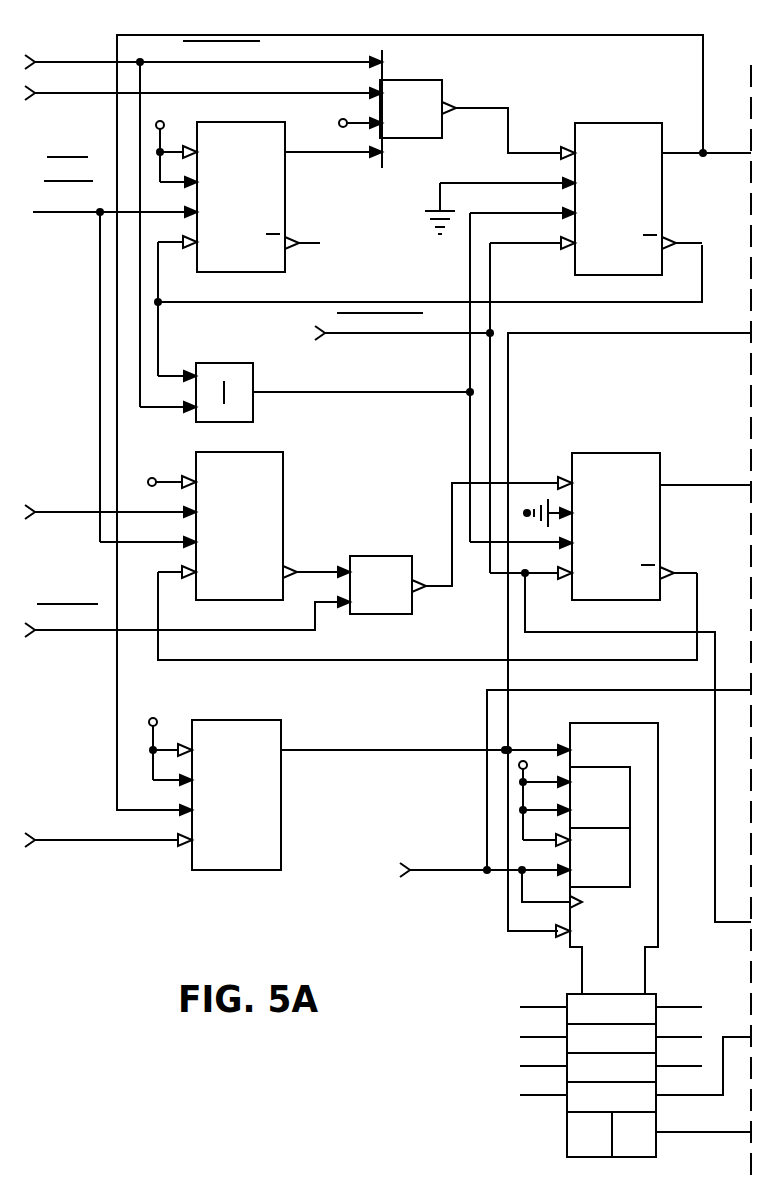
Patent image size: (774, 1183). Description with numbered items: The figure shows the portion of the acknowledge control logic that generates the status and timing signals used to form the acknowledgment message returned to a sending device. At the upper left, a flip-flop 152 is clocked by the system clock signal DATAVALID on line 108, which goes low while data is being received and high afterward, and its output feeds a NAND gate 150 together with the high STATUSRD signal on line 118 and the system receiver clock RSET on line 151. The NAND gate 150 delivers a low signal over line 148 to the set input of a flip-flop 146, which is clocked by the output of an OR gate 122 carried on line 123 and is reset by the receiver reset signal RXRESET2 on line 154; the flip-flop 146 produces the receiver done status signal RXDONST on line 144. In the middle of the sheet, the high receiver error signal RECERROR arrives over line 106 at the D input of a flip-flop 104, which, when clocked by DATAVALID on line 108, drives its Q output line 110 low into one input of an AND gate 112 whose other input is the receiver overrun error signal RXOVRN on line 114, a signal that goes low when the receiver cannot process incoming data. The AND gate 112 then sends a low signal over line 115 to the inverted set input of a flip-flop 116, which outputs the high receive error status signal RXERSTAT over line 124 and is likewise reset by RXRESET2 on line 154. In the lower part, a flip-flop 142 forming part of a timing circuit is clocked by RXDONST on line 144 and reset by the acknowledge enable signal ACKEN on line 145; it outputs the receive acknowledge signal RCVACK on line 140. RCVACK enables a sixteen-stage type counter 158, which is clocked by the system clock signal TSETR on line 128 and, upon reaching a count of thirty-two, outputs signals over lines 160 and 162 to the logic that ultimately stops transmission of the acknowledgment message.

The line 118 is at (100, 62).
The line 151 is at (100, 96).
The line 108 is at (100, 265).
The flip-flop 152 is at (285, 196).
The NAND gate 150 is at (405, 83).
The line 148 is at (490, 108).
The LS74 flip-flop 146 is at (628, 124).
The line 144 is at (660, 37).
The OR gate 122 is at (231, 363).
The line 123 is at (351, 392).
The line 154 is at (441, 335).
The LS74 flip-flop 104 is at (283, 474).
The line 106 is at (81, 513).
The Q output line 110 is at (310, 568).
The AND gate 112 is at (371, 556).
The line 114 is at (317, 615).
The line 115 is at (441, 590).
The LS74 flip-flop 116 is at (613, 453).
The line 124 is at (736, 488).
The 74LS flip-flop 142 is at (233, 720).
The line 140 is at (421, 752).
The line 145 is at (108, 845).
The line 128 is at (486, 703).
The LS161 counter 158 is at (608, 723).
The line 160 is at (680, 1097).
The line 162 is at (680, 1134).